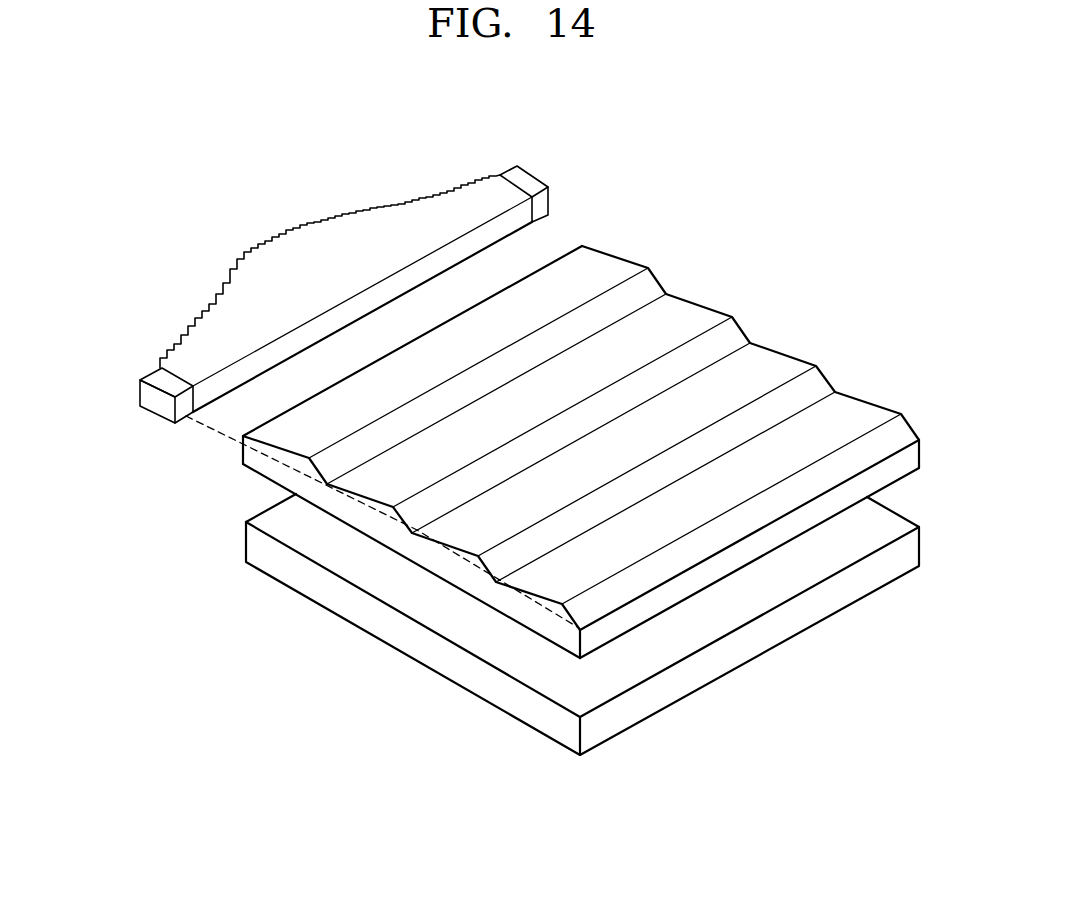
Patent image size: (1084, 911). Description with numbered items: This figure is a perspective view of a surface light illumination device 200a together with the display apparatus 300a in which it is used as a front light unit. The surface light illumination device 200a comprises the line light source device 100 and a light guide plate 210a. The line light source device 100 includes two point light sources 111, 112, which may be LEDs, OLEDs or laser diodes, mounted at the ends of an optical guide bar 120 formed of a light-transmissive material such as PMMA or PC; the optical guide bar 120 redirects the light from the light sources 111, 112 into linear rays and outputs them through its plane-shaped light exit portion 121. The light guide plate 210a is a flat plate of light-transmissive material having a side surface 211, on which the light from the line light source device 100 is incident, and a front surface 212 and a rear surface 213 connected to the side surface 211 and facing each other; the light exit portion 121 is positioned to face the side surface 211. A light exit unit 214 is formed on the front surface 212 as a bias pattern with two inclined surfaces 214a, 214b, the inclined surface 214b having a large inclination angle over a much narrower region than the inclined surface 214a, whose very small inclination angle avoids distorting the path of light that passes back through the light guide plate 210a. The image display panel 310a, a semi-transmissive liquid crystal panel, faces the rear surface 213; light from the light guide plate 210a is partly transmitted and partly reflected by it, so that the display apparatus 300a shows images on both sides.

The line light source device 100 is at (157, 438).
The light source 111 is at (143, 400).
The light source 112 is at (518, 172).
The optical guide bar 120 is at (200, 332).
The light exit portion 121 is at (205, 390).
The surface light illumination device 200a is at (343, 522).
The light guide plate 210a is at (260, 479).
The side surface 211 is at (244, 457).
The front surface 212 is at (377, 515).
The rear surface 213 is at (427, 543).
The light exit unit 214 is at (558, 603).
The inclined surface 214a is at (600, 557).
The inclined surface 214b is at (593, 607).
The semi-transmissive display apparatus 300a is at (862, 194).
The image display panel 310a is at (764, 633).